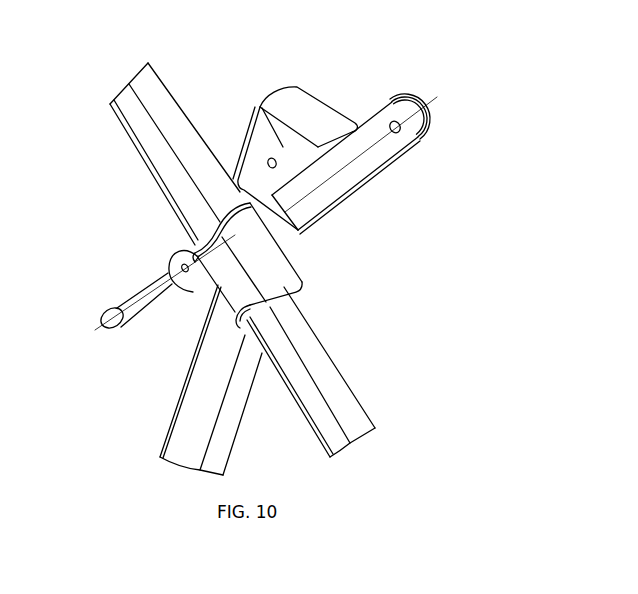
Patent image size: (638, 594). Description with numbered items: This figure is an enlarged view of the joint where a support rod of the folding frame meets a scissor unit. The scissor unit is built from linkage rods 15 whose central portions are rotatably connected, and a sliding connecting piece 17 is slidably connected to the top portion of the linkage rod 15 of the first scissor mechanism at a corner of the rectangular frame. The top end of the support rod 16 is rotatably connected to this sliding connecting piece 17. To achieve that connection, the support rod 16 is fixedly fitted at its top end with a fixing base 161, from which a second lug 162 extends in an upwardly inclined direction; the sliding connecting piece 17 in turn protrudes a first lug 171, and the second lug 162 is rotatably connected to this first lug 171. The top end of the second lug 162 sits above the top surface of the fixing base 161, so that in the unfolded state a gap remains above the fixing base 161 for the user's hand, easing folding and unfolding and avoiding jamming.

The linkage rod 15 is at (140, 147).
The support rod 16 is at (207, 383).
The sliding connecting piece 17 is at (262, 268).
The first lug 171 is at (172, 262).
The fixing base 161 is at (262, 106).
The second lug 162 is at (412, 150).